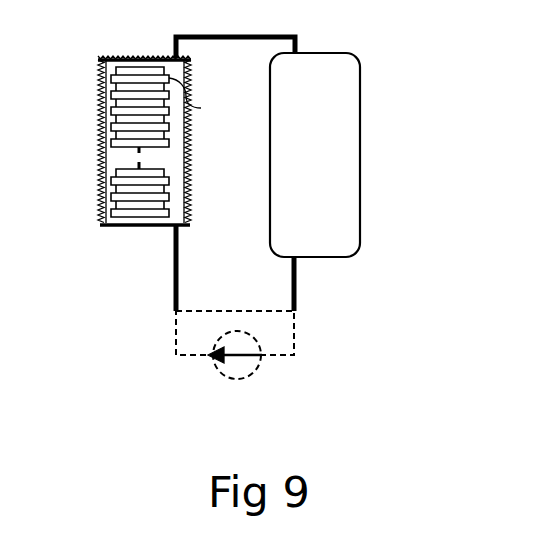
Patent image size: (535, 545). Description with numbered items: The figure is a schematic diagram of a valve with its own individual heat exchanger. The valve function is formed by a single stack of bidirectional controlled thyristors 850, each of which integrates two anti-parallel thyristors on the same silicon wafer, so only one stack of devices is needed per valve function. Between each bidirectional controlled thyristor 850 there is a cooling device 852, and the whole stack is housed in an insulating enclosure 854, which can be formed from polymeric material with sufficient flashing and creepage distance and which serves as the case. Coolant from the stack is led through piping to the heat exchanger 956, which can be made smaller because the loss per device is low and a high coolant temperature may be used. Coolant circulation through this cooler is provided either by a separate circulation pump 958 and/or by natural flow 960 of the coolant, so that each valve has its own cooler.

The bidirectional controlled thyristor 850 is at (165, 71).
The cooling device 852 is at (208, 101).
The insulating enclosure 854 is at (98, 182).
The heat exchanger 956 is at (361, 148).
The circulation pump 958 is at (255, 368).
The natural flow 960 is at (272, 313).